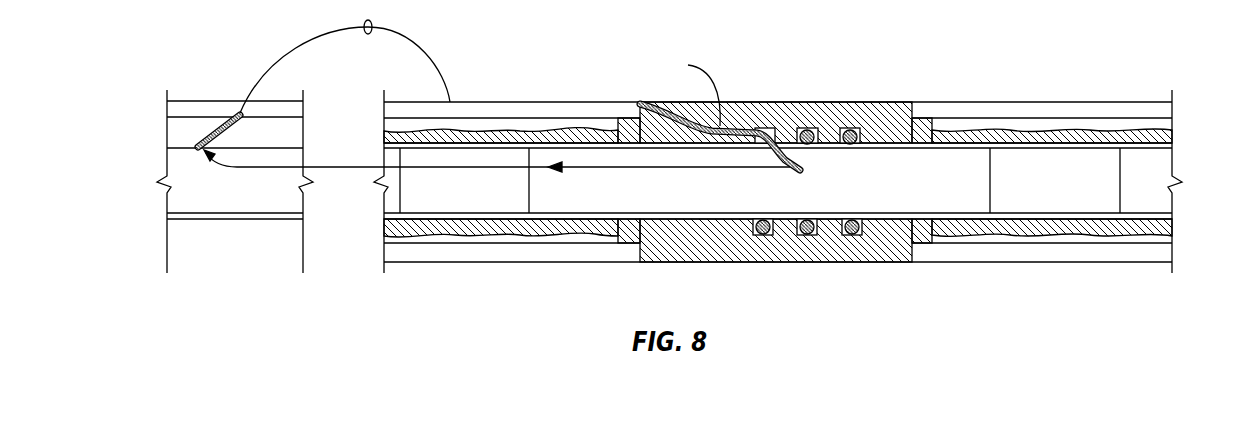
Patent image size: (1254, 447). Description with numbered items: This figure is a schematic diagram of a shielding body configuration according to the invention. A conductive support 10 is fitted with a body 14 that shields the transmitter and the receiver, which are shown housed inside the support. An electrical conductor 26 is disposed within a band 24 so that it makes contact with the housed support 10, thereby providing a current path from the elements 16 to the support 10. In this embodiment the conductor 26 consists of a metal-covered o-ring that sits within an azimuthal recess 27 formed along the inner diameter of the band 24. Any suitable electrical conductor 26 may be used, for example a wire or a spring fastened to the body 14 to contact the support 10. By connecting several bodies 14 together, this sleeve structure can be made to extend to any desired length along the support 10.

The conductive support 10 is at (1170, 158).
The body 14 is at (508, 84).
The elements 16 is at (411, 100).
The band 24 is at (840, 102).
The electrical conductor 26 is at (765, 130).
The azimuthal recess 27 is at (851, 240).